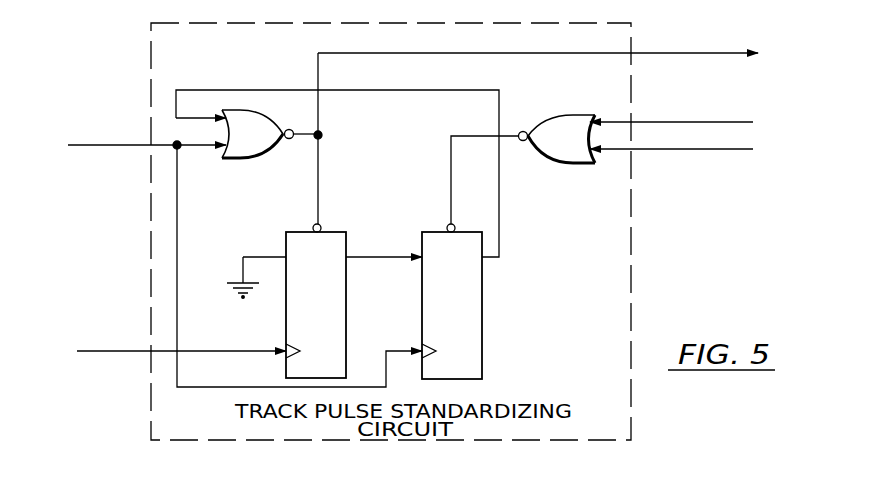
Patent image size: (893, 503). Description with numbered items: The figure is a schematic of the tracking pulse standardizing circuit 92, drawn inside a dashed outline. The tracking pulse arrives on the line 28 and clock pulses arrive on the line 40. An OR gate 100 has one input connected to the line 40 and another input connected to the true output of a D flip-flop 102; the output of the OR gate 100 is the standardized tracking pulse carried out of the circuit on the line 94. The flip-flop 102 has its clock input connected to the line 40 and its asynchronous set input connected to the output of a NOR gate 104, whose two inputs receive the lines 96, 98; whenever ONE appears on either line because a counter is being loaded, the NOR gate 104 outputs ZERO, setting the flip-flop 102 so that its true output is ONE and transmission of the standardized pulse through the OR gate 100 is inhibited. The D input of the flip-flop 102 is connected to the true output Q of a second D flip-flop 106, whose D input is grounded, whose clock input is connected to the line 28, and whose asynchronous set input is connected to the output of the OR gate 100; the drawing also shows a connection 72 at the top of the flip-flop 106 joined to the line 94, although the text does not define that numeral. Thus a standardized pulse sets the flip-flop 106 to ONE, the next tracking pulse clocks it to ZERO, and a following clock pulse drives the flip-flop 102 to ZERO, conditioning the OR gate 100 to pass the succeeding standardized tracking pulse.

The line 28 is at (97, 350).
The line 40 is at (98, 144).
The inverted output of flip-flop 106 72 is at (334, 231).
The tracking pulse standardizing circuit 92 is at (634, 274).
The signal line 94 is at (731, 57).
The signal line 96 is at (748, 123).
The signal line 98 is at (733, 151).
The OR gate 100 is at (251, 159).
The D flip-flop 102 is at (480, 311).
The NOR gate 104 is at (581, 115).
The D flip-flop 106 is at (346, 326).